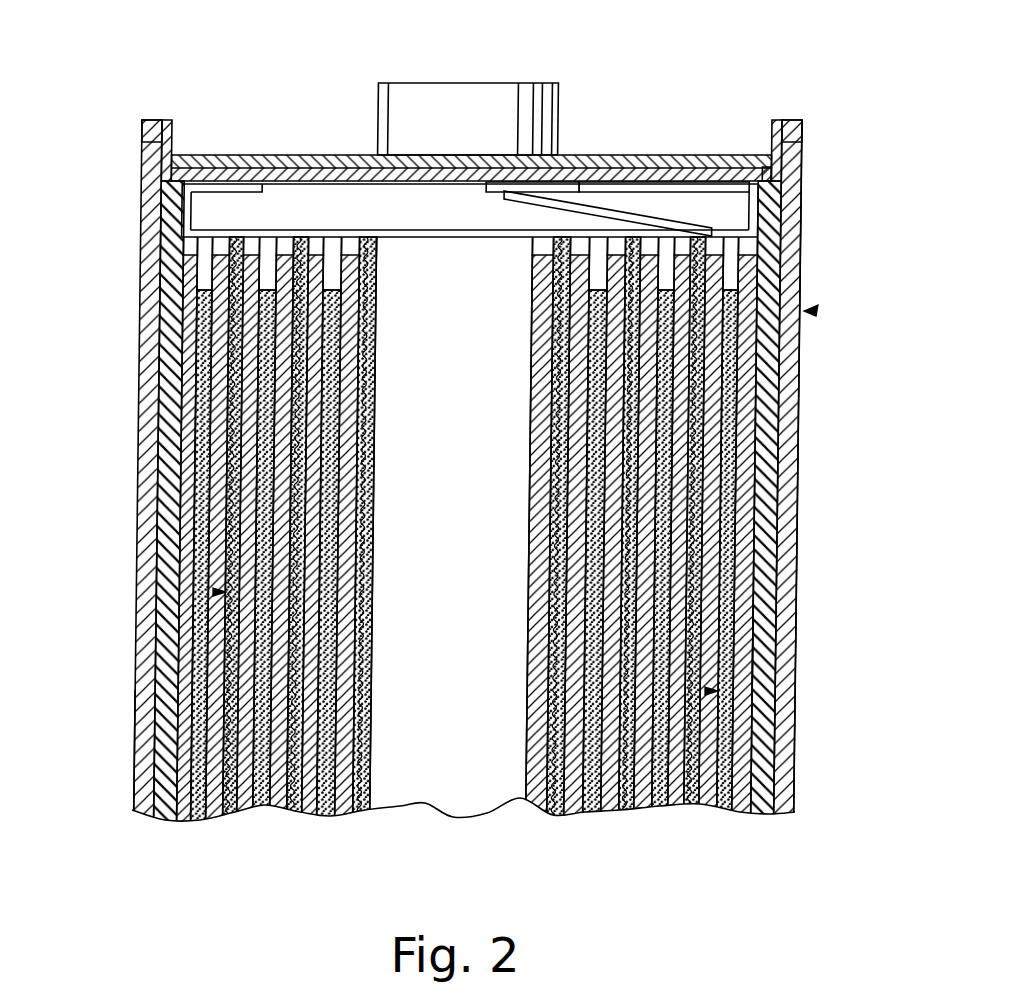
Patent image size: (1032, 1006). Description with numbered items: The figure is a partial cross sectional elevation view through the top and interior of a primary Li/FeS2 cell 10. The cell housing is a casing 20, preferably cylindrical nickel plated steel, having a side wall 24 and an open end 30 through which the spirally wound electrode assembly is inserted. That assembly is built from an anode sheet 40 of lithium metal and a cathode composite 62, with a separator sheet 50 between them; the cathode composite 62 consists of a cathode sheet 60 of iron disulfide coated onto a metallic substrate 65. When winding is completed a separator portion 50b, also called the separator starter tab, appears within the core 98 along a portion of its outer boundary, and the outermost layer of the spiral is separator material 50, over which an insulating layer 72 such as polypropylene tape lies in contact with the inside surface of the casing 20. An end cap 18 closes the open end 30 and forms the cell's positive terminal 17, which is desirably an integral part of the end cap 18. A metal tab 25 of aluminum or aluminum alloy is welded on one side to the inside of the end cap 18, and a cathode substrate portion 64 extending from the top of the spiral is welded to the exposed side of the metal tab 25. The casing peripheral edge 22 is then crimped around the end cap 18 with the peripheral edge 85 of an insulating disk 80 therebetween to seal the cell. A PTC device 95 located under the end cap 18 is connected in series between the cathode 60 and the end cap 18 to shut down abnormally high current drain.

The cell 10 is at (814, 311).
The positive terminal 17 is at (468, 83).
The end cap 18 is at (282, 153).
The casing 20 is at (150, 215).
The casing peripheral edge 22 is at (145, 128).
The casing side wall 24 is at (132, 712).
The metal tab (cathode tab) 25 is at (697, 224).
The open end 30 is at (175, 150).
The anode sheet 40 is at (205, 440).
The separator sheet 50 is at (200, 523).
The separator portion (separator starter tab) 50b is at (525, 797).
The cathode sheet 60 is at (700, 580).
The cathode composite 62 is at (215, 592).
The cathode substrate portion 64 is at (707, 250).
The metallic substrate (cathode substrate) 65 is at (748, 630).
The insulating layer 72 is at (165, 345).
The insulating disk 80 is at (790, 164).
The peripheral edge of insulating disk 85 is at (168, 118).
The PTC device 95 is at (605, 183).
The core 98 is at (434, 692).